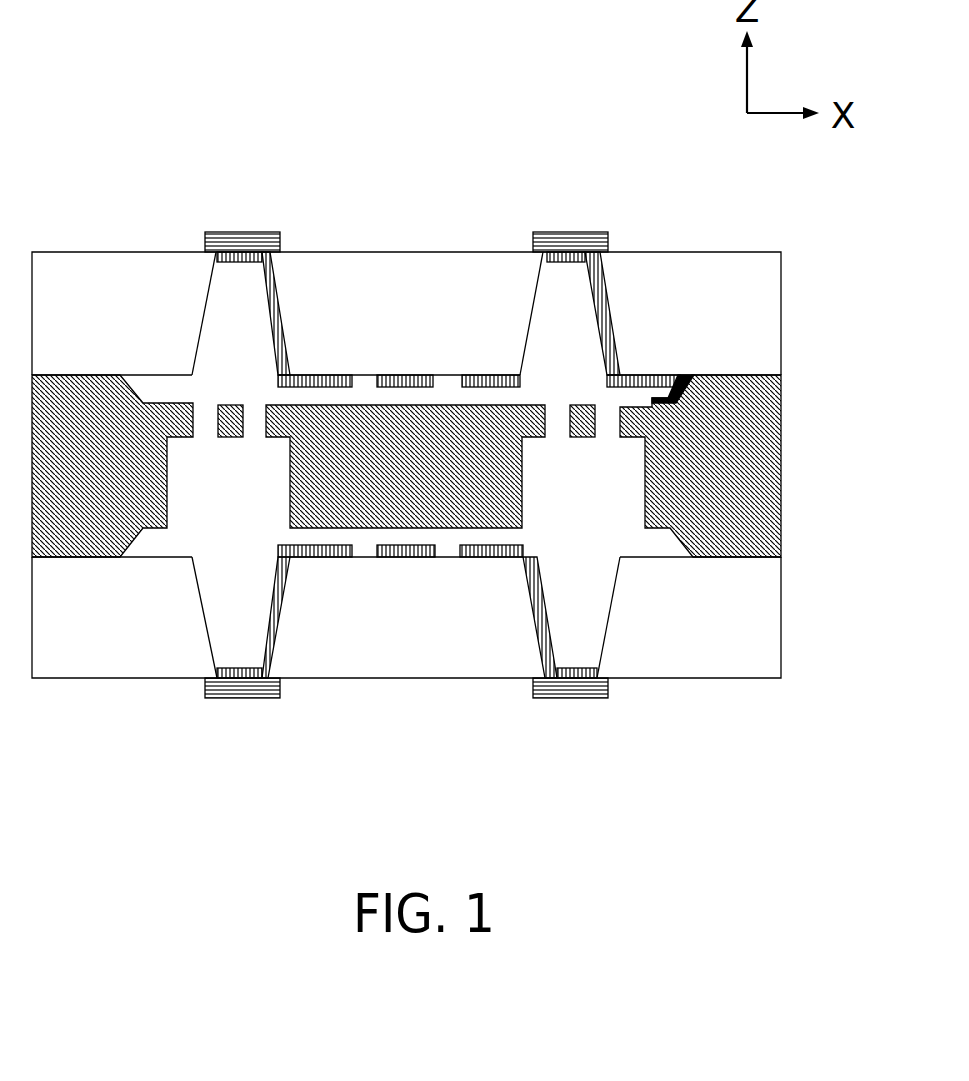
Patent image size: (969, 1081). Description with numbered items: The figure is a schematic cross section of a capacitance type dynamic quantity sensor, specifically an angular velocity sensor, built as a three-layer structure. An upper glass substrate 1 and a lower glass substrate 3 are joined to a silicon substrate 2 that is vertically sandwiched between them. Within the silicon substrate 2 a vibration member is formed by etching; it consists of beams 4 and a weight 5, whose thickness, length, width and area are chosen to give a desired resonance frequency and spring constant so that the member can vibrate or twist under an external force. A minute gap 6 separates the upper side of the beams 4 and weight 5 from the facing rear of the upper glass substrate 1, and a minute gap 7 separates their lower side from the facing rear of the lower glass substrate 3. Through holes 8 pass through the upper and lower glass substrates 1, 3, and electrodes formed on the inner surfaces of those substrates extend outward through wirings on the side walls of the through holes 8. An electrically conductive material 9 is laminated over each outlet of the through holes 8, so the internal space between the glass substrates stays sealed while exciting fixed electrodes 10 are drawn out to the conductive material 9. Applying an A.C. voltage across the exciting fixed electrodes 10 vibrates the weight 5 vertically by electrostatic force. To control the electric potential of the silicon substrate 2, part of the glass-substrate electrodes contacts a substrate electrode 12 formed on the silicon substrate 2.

The upper glass substrate 1 is at (767, 328).
The silicon substrate 2 is at (767, 484).
The lower glass substrate 3 is at (767, 612).
The beams 4 is at (217, 437).
The weight 5 is at (297, 487).
The minute gap 6 is at (170, 388).
The minute gap 7 is at (333, 538).
The through holes 8 is at (578, 328).
The electrically conductive material 9 is at (593, 243).
The exciting fixed electrodes 10 is at (435, 552).
The substrate electrode 12 is at (687, 395).